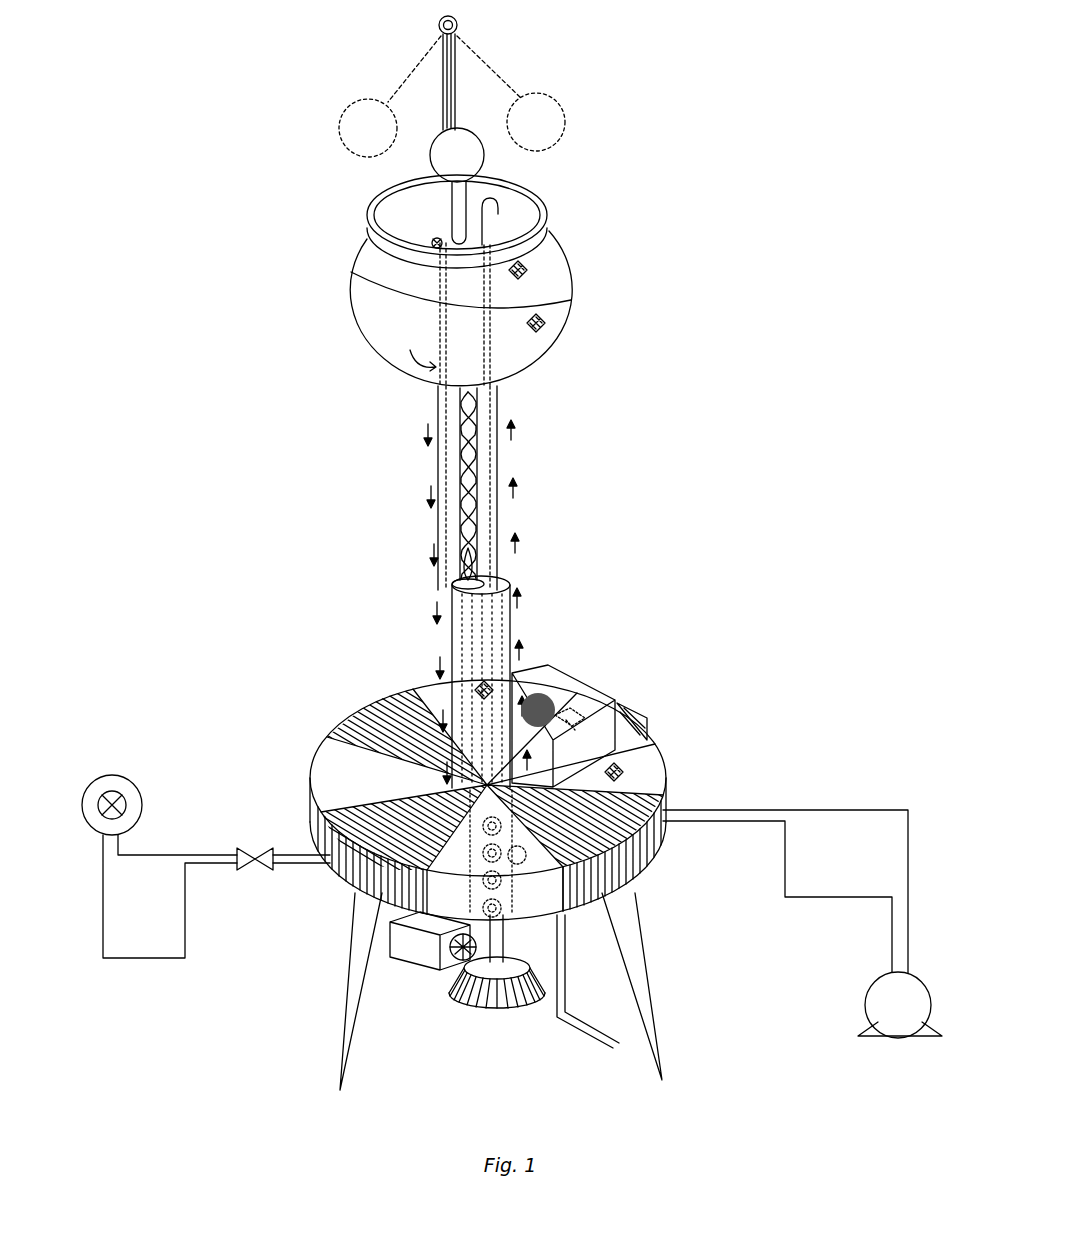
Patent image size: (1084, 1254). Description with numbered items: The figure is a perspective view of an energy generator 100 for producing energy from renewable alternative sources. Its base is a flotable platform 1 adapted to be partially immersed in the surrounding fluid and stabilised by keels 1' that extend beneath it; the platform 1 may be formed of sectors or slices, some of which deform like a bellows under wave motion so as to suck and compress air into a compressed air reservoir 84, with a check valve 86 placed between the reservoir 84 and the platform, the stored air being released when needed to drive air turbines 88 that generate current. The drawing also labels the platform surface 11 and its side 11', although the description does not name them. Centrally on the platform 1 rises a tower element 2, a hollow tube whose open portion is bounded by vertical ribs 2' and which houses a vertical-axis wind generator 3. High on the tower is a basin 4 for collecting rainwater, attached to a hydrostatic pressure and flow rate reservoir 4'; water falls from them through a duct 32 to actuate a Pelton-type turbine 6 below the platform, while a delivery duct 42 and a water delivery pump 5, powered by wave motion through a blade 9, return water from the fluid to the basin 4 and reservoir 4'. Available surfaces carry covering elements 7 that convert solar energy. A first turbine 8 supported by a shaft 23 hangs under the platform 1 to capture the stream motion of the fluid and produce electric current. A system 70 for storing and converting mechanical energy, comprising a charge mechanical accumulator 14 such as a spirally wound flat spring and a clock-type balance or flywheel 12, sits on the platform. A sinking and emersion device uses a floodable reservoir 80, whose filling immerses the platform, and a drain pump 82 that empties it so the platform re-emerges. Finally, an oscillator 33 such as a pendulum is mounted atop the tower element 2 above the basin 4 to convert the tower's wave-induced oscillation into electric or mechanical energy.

The energy generator 100 is at (742, 266).
The oscillator 33 is at (400, 74).
The basin 4 is at (493, 256).
The hydrostatic pressure and flow rate reservoir 4' is at (416, 308).
The covering elements 7 is at (528, 265).
The tower element 2 is at (507, 581).
The vertical ribs 2' is at (470, 487).
The wind generator 3 is at (492, 517).
The duct 32 is at (440, 523).
The delivery duct 42 is at (507, 553).
The flotable platform 1 is at (441, 797).
The platform top surface 11 is at (439, 779).
The platform side wall 11' is at (473, 857).
The shaft 23 is at (560, 923).
The water delivery pump 5 is at (633, 877).
The system for storing and converting mechanical energy 70 is at (600, 700).
The charge mechanical accumulator 14 is at (583, 675).
The balance or flywheel 12 is at (647, 712).
The stabilising keels 1' is at (511, 991).
The blade 9 is at (615, 1050).
The turbine 6 is at (443, 960).
The first turbine 8 is at (520, 1008).
The air turbines 88 is at (103, 775).
The compressed air reservoir 84 is at (150, 950).
The check valve 86 is at (238, 870).
The floodable reservoir 80 is at (815, 825).
The drain pump 82 is at (862, 1025).